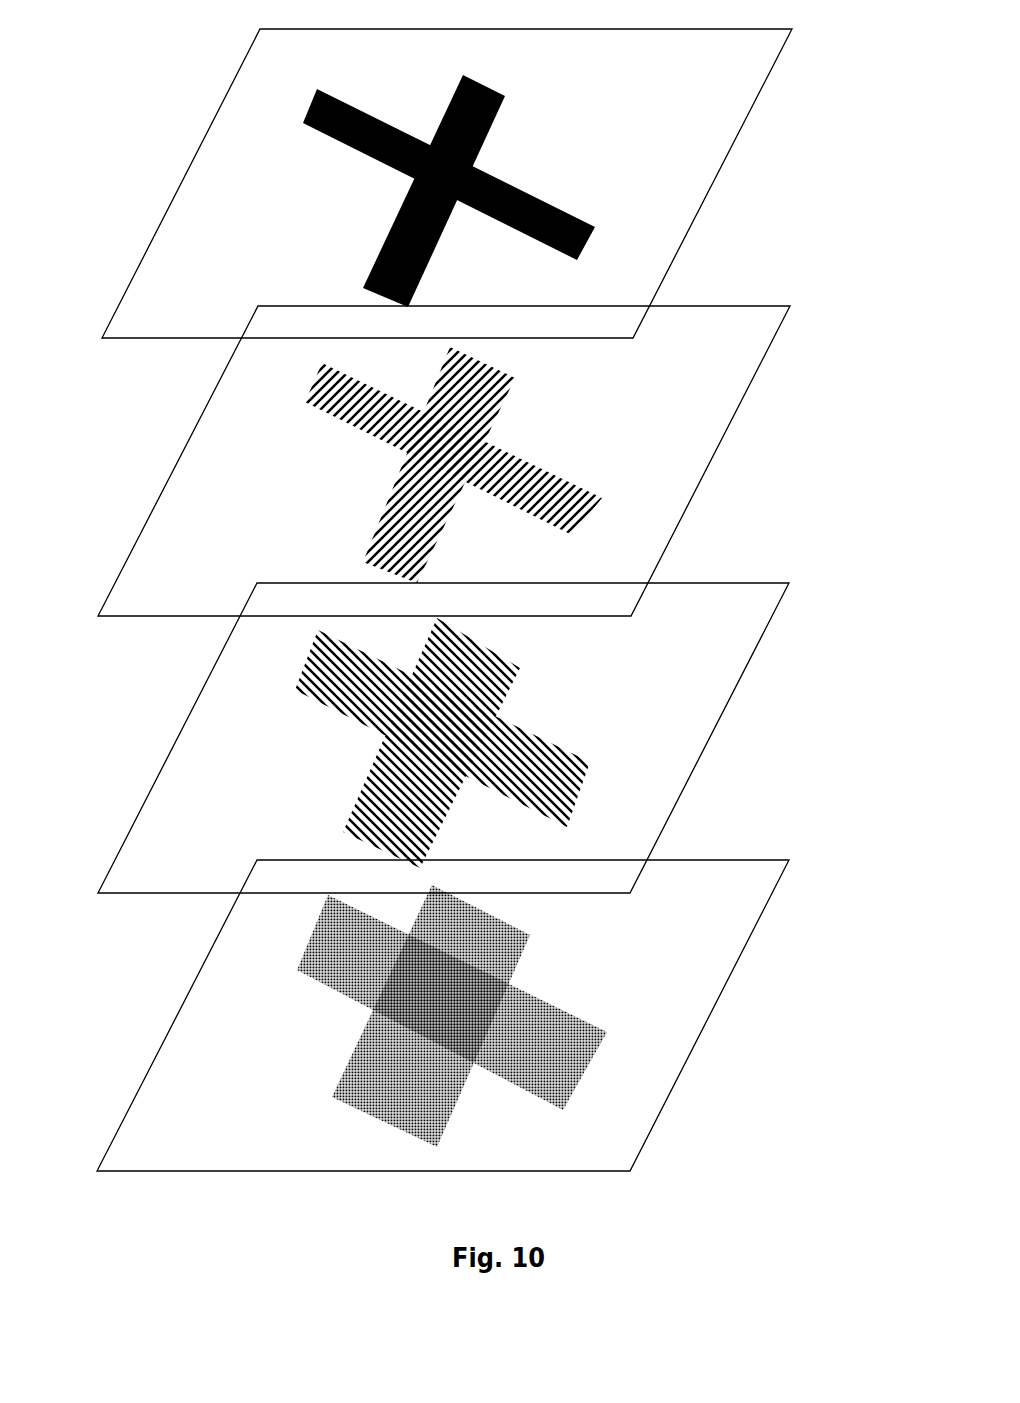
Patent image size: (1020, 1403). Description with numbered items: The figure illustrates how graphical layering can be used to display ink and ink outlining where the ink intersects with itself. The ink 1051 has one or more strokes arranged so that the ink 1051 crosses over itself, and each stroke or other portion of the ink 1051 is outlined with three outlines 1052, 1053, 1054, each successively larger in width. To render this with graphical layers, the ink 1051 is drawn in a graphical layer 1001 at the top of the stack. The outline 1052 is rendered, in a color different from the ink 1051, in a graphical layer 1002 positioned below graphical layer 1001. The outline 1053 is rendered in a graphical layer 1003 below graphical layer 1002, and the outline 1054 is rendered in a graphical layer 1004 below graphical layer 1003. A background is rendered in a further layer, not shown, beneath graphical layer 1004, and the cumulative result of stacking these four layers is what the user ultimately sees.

The graphical layer 1001 is at (140, 338).
The graphical layer 1002 is at (137, 616).
The graphical layer 1003 is at (137, 893).
The graphical layer 1004 is at (137, 1171).
The ink 1051 is at (357, 148).
The outline 1052 is at (360, 423).
The outline 1053 is at (330, 708).
The outline 1054 is at (322, 985).